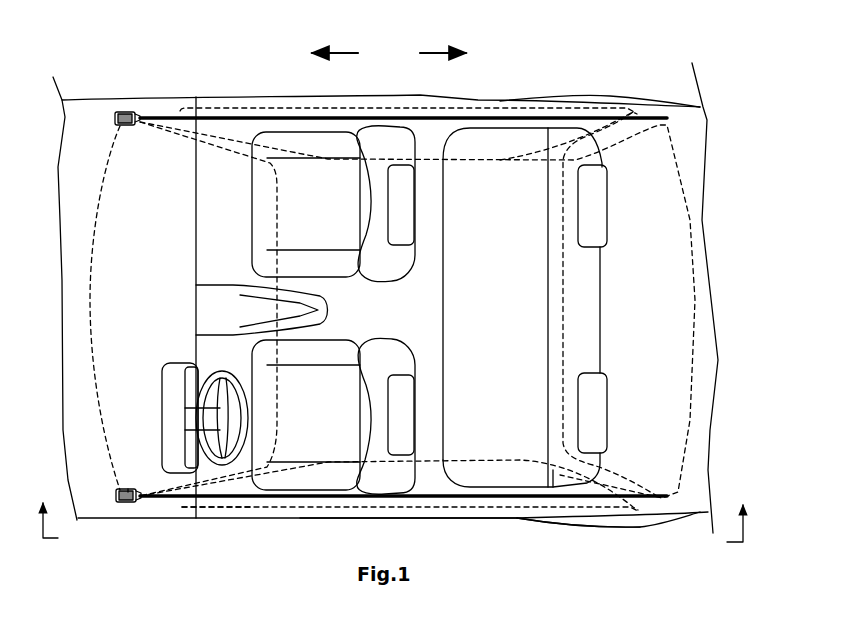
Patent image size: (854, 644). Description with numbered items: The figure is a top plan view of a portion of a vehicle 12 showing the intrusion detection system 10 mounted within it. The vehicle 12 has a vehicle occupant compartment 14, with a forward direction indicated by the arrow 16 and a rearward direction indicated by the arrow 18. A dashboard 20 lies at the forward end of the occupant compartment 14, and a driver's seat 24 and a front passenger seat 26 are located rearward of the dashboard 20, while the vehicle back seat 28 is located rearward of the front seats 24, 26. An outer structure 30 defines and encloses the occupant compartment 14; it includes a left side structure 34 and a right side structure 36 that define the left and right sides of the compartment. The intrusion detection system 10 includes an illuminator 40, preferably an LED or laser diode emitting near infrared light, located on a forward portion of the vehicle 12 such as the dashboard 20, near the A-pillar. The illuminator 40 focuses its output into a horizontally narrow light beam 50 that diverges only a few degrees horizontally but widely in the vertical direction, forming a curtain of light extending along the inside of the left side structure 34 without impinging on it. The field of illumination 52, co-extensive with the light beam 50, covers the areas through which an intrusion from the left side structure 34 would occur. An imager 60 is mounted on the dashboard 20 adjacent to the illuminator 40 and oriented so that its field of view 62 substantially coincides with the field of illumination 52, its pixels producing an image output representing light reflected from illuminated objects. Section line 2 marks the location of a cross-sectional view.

The section line 2- 2 is at (393, 509).
The intrusion detection system 10 is at (251, 549).
The vehicle 12 is at (180, 86).
The vehicle occupant compartment 14 is at (368, 317).
The arrow 16 is at (340, 52).
The arrow 18 is at (435, 52).
The dashboard 20 is at (137, 283).
The driver's seat 24 is at (397, 362).
The front passenger seat 26 is at (397, 252).
The vehicle back seat 28 is at (602, 333).
The outer structure 30 is at (482, 531).
The left side structure 34 is at (436, 521).
The right side structure 36 is at (479, 100).
The illuminator 40 is at (115, 495).
The light beam 50 is at (296, 504).
The field of illumination 52 is at (351, 503).
The imager 60 is at (128, 490).
The field of view 62 is at (252, 505).